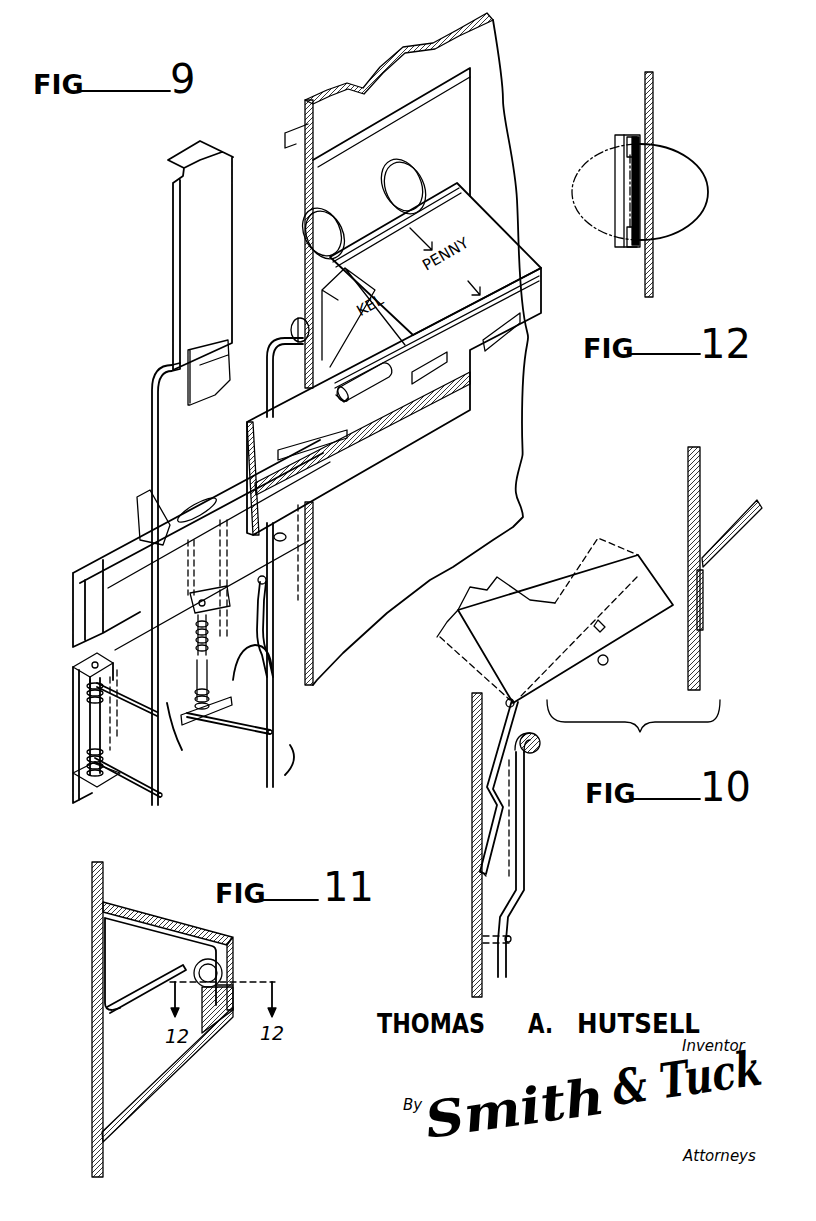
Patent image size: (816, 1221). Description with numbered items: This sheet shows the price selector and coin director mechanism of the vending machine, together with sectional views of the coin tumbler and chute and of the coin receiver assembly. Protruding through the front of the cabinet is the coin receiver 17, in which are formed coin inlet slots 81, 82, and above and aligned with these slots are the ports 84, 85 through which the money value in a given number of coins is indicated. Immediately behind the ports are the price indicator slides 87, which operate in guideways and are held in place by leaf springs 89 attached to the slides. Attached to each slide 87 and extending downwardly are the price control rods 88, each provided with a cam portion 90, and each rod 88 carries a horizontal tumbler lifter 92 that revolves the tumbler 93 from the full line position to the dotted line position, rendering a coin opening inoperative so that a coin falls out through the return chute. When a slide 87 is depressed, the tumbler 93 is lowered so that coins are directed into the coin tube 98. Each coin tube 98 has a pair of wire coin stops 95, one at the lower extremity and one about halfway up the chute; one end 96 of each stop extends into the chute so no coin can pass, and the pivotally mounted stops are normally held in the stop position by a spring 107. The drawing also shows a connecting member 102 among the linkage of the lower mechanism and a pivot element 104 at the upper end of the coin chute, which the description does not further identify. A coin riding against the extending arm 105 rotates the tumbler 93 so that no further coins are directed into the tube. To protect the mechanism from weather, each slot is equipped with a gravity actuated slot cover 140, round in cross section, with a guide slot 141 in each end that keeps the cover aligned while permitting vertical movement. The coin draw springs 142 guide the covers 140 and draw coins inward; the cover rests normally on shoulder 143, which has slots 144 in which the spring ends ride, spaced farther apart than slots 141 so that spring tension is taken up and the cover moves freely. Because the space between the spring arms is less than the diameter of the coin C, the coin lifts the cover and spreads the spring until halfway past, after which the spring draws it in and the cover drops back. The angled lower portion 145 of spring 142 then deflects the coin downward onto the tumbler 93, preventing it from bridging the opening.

In FIG. 9, the coin receiver 17 is at (545, 293).
In FIG. 11, the coin receiver 17 is at (153, 912).
In FIG. 9, the coin inlet slot 81 is at (424, 373).
In FIG. 11, the coin inlet slot 81 is at (233, 978).
In FIG. 9, the coin inlet slot 82 is at (487, 337).
In FIG. 9, the port 84 is at (335, 210).
In FIG. 9, the port 85 is at (417, 160).
In FIG. 9, the price indicator slide 87 is at (188, 280).
In FIG. 9, the price control rod 88 is at (152, 385).
In FIG. 9, the leaf spring 89 is at (190, 395).
In FIG. 9, the cam portion 90 is at (260, 612).
In FIG. 9, the horizontal tumbler lifter 92 is at (190, 505).
In FIG. 10, the horizontal tumbler lifter 92 is at (603, 666).
In FIG. 10, the tumbler 93 is at (627, 630).
In FIG. 9, the coin stop 95 is at (137, 780).
In FIG. 9, the coin stop end 96 is at (266, 590).
In FIG. 10, the coin stop end 96 is at (511, 938).
In FIG. 9, the coin tube 98 is at (167, 705).
In FIG. 10, the coin tube 98 is at (490, 798).
In FIG. 9, the connecting rod 102 is at (245, 720).
In FIG. 10, the roller 104 is at (541, 749).
In FIG. 10, the extending arm 105 is at (495, 867).
In FIG. 9, the spring 107 is at (67, 728).
In FIG. 9, the slot cover 140 is at (387, 392).
In FIG. 12, the slot cover 140 is at (627, 188).
In FIG. 11, the slot cover 140 is at (224, 968).
In FIG. 12, the guide slot 141 is at (630, 137).
In FIG. 9, the coin draw spring 142 is at (350, 302).
In FIG. 11, the coin draw spring 142 is at (160, 935).
In FIG. 11, the shoulder 143 is at (233, 1013).
In FIG. 9, the slot 144 is at (340, 407).
In FIG. 11, the lower portion of spring 145 is at (157, 988).
In FIG. 12, the coin C is at (707, 177).